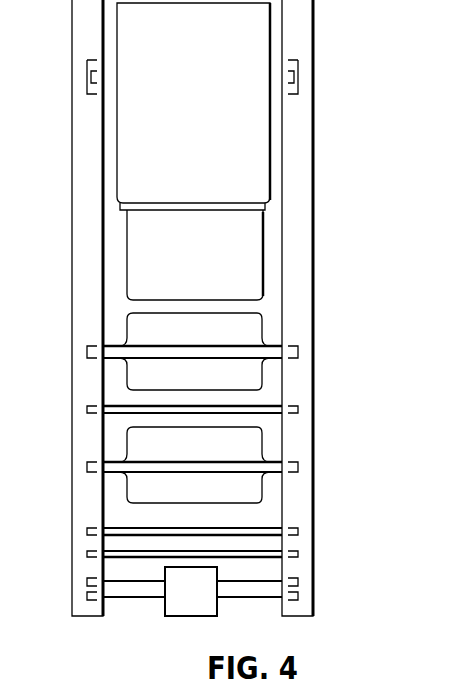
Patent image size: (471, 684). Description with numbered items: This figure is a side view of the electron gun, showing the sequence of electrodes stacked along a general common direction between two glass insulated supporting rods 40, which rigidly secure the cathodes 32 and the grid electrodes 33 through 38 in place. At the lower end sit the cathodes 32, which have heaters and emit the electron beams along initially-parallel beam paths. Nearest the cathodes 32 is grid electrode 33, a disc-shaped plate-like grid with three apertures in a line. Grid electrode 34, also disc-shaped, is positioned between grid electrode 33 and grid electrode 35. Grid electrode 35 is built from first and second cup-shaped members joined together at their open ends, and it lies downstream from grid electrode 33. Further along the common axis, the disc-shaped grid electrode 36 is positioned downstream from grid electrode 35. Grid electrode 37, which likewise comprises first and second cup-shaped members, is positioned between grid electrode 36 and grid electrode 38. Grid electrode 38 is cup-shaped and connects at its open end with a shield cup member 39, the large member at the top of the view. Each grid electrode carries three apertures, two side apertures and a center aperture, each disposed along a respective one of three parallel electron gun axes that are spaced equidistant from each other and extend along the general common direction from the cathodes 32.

The cathode 32 is at (182, 616).
The grid electrode 33 is at (262, 558).
The grid electrode 34 is at (270, 528).
The grid electrode 35 is at (245, 447).
The grid electrode 36 is at (260, 407).
The grid electrode 37 is at (245, 328).
The grid electrode 38 is at (247, 260).
The shield cup member 39 is at (120, 126).
The glass insulated supporting rod 40 is at (82, 27).